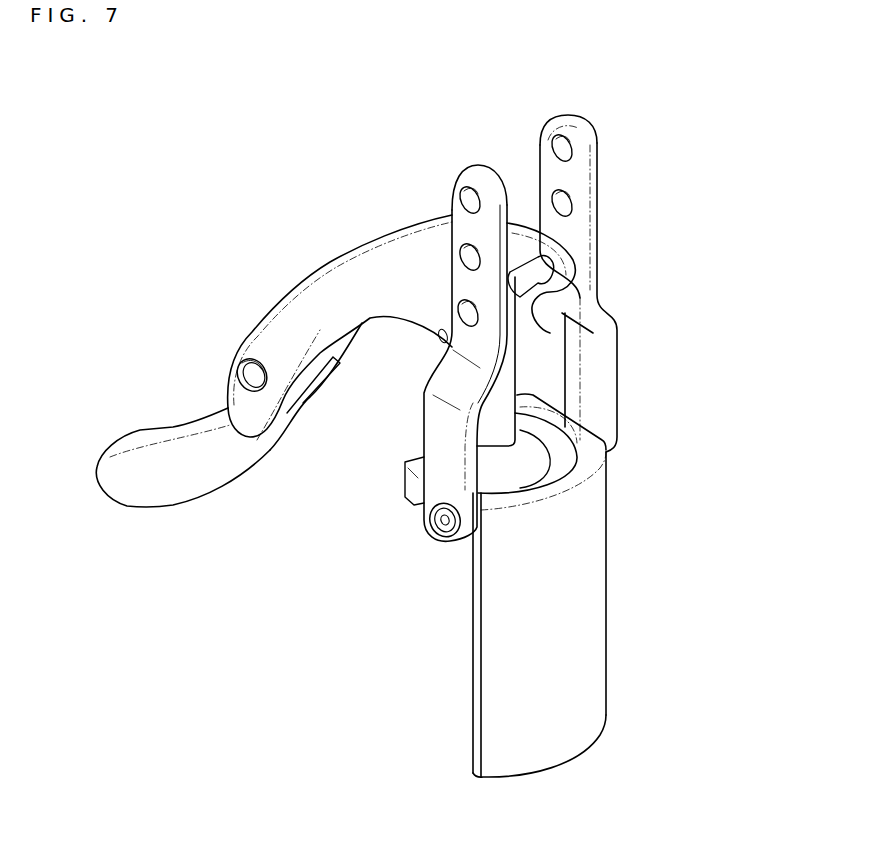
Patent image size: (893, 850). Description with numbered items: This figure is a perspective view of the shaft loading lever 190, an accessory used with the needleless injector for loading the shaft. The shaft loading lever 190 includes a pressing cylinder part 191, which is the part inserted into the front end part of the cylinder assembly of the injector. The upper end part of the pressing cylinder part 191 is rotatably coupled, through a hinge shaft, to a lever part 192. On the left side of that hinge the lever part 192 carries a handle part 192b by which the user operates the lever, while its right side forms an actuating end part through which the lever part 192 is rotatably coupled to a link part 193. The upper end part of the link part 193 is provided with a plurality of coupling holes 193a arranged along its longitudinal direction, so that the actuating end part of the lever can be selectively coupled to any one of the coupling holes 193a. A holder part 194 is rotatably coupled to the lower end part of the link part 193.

The shaft loading lever 190 is at (245, 256).
The pressing cylinder part 191 is at (517, 368).
The lever part 192 is at (365, 275).
The handle part 192b is at (168, 427).
The link part 193 is at (597, 238).
The coupling holes 193a is at (570, 200).
The holder part 194 is at (606, 578).